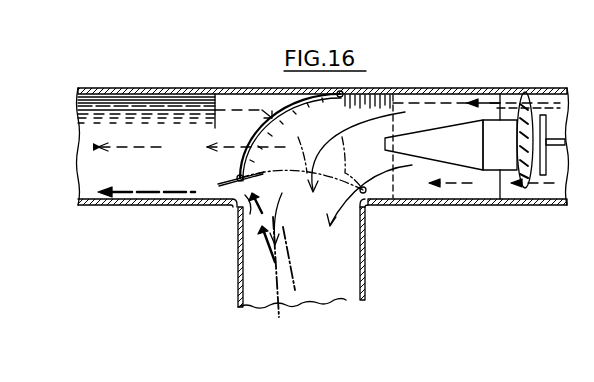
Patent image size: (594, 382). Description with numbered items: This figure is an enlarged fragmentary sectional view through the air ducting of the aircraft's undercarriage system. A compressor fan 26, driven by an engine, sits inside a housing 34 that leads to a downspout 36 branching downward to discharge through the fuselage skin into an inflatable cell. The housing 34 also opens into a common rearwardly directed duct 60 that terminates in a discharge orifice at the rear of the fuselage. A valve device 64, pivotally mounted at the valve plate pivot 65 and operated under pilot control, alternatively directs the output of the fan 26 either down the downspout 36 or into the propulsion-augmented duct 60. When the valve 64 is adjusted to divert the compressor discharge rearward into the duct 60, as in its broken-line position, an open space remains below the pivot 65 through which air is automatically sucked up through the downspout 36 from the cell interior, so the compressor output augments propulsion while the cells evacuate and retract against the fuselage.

The rearwardly directed duct 60 is at (137, 90).
The housing 34 is at (492, 90).
The compressor fan 26 is at (526, 188).
The valve device 64 is at (298, 111).
The valve plate pivot 65 is at (239, 178).
The downspout 36 is at (366, 252).